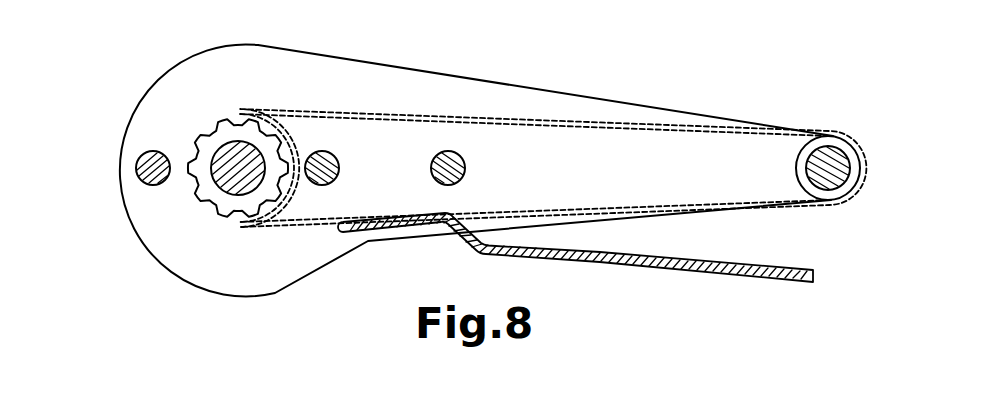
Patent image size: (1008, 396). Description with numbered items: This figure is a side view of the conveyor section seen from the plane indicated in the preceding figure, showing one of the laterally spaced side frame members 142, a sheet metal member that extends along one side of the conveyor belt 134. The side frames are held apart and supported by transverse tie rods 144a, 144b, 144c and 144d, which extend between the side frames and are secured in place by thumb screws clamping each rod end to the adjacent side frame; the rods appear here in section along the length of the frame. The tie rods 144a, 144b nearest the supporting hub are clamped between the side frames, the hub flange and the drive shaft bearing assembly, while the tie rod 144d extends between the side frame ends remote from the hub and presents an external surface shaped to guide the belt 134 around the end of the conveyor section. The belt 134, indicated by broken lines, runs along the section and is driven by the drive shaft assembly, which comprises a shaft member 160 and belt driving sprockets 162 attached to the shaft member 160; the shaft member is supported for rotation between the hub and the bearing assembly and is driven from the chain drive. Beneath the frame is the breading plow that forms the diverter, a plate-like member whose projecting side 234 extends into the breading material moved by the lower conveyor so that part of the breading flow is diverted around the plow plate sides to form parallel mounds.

The side frame member 142 is at (337, 78).
The conveyor belt 134 is at (507, 117).
The belt driving sprocket 162 is at (233, 137).
The shaft member 160 is at (240, 170).
The tie rod 144a is at (152, 153).
The tie rod 144b is at (323, 154).
The tie rod 144c is at (447, 158).
The tie rod 144d is at (836, 154).
The projecting side 234 is at (817, 275).